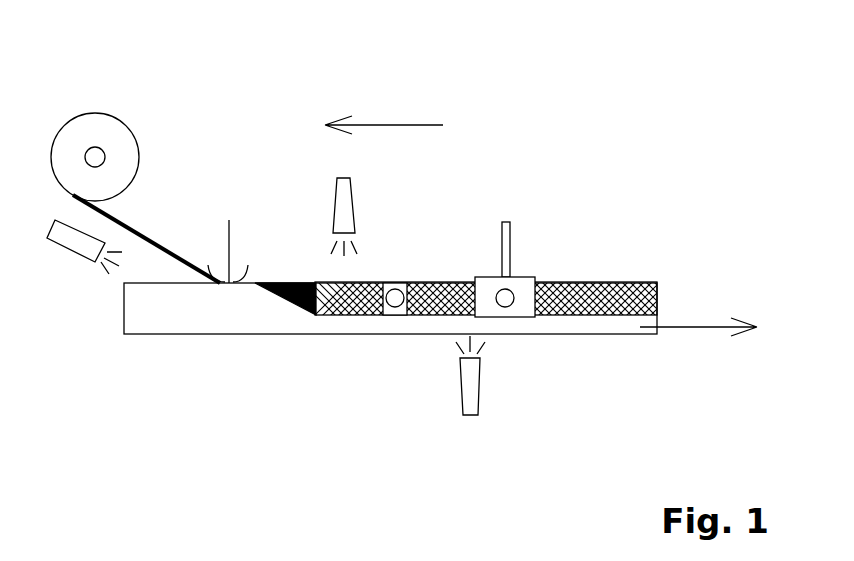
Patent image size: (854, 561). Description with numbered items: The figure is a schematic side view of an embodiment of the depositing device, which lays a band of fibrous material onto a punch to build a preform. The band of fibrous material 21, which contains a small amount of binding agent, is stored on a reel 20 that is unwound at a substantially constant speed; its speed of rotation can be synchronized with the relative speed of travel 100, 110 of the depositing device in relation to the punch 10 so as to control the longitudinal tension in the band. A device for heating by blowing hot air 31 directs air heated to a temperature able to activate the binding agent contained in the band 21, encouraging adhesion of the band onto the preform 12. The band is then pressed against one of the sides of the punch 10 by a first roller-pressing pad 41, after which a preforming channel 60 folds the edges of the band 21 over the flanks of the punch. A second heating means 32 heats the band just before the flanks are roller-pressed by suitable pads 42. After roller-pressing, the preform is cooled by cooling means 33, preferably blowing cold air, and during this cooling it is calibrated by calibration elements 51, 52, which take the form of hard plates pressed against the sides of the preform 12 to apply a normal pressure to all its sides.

The punch 10 is at (137, 318).
The preform 12 is at (597, 281).
The reel 20 is at (91, 128).
The band of fibrous material 21 is at (158, 246).
The device for heating by blowing hot air 31 is at (66, 235).
The heating means 32 is at (353, 210).
The cooling means 33 is at (470, 415).
The first roller-pressing pad 41 is at (231, 236).
The roller-pressing pads 42 is at (395, 310).
The calibration element 51 is at (510, 238).
The calibration element 52 is at (517, 313).
The preforming channel 60 is at (283, 297).
The relative speed of travel 100 is at (423, 125).
The relative speed of travel 110 is at (680, 327).